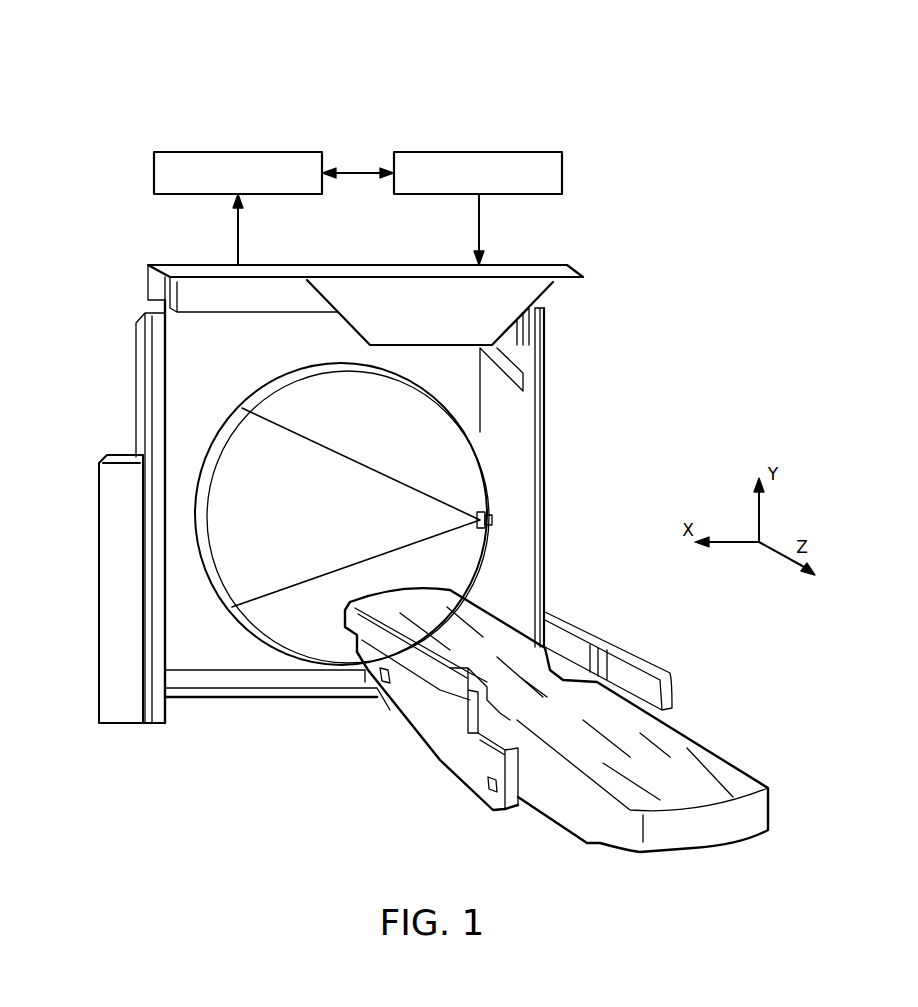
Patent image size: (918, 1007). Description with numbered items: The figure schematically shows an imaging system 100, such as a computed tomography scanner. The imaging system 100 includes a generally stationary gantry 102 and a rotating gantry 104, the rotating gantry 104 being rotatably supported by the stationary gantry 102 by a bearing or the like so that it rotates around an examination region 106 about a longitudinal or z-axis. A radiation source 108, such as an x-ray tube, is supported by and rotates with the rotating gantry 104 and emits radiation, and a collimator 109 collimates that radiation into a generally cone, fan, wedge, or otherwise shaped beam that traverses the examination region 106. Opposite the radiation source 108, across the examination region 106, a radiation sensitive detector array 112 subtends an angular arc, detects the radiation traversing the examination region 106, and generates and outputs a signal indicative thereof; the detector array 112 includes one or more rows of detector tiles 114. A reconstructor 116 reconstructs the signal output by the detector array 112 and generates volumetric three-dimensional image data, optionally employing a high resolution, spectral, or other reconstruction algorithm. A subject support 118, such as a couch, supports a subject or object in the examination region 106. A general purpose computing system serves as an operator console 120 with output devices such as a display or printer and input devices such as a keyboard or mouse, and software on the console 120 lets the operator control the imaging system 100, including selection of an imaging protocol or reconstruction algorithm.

The imaging system 100 is at (122, 88).
The stationary gantry 102 is at (142, 358).
The rotating gantry 104 is at (280, 377).
The examination region 106 is at (364, 522).
The radiation source 108 is at (490, 519).
The collimator 109 is at (487, 514).
The radiation sensitive detector array 112 is at (240, 412).
The detector tiles 114 is at (200, 497).
The reconstructor 116 is at (482, 150).
The subject support 118 is at (708, 758).
The operator console 120 is at (242, 150).